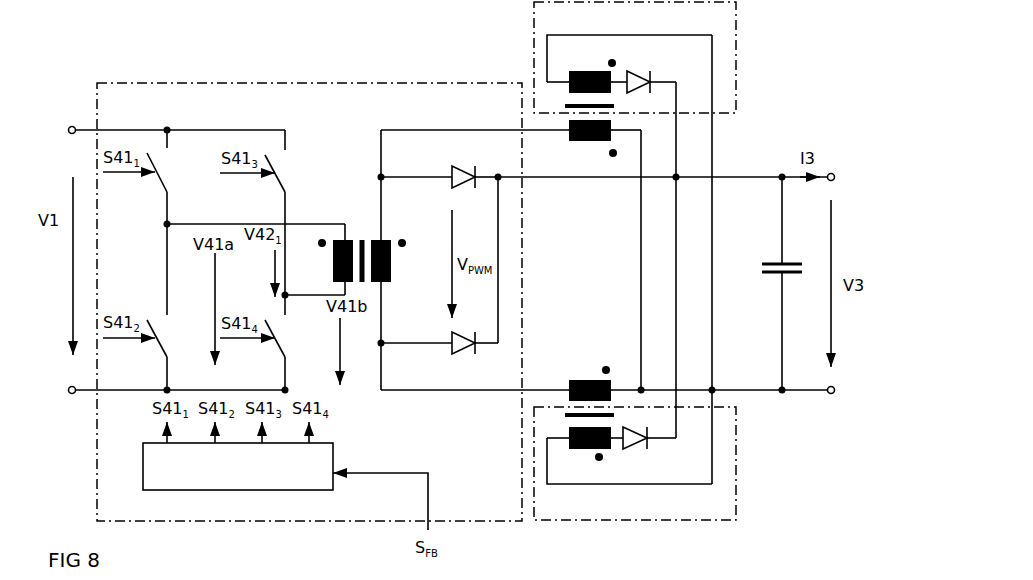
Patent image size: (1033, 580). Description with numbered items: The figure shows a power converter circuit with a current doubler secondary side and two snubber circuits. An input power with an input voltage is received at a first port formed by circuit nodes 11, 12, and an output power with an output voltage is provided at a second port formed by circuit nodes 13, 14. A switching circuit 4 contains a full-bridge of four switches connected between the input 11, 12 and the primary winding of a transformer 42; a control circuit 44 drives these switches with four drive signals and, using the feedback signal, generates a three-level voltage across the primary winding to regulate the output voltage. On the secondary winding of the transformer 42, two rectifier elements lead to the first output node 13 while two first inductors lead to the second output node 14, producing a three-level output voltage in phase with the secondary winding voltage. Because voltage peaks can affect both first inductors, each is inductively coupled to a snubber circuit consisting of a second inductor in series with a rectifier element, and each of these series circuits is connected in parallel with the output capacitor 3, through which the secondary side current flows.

The first input node 11 is at (68, 125).
The second input node 12 is at (68, 397).
The first output node 13 is at (835, 160).
The second output node 14 is at (834, 398).
The switching circuit 4 is at (392, 83).
The transformer 42 is at (364, 231).
The control circuit 44 is at (336, 452).
The output capacitor 3 is at (789, 256).